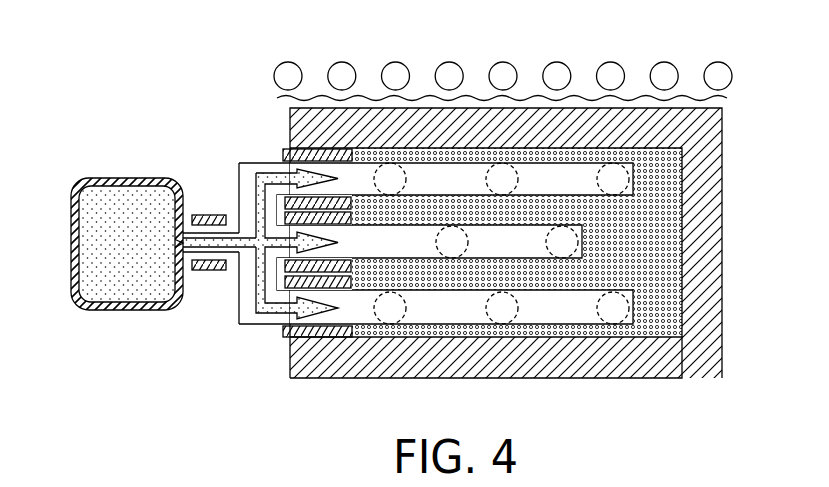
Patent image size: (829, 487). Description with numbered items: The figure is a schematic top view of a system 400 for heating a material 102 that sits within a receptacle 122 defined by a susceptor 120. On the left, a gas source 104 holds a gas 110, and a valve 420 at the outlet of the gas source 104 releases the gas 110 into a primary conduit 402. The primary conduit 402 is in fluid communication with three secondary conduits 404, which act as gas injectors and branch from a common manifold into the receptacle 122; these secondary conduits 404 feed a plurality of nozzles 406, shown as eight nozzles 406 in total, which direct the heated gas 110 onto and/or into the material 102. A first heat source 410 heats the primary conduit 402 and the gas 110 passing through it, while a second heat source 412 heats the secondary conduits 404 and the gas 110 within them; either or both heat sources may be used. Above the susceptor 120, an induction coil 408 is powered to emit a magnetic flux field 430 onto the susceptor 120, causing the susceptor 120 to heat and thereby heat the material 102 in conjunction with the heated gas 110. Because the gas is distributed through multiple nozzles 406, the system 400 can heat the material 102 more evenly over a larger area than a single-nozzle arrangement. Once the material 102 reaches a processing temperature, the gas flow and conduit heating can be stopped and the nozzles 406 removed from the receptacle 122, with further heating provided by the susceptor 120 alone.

The system 400 is at (228, 66).
The material 102 is at (675, 247).
The gas source 104 is at (102, 178).
The gas 110 is at (90, 247).
The susceptor 120 is at (330, 370).
The receptacle 122 is at (672, 190).
The primary conduit 402 is at (206, 272).
The secondary conduits 404 is at (451, 176).
The nozzles 406 is at (612, 310).
The induction coil 408 is at (343, 70).
The first heat source 410 is at (209, 213).
The second heat source 412 is at (287, 152).
The valve 420 is at (166, 243).
The magnetic flux field 430 is at (728, 100).